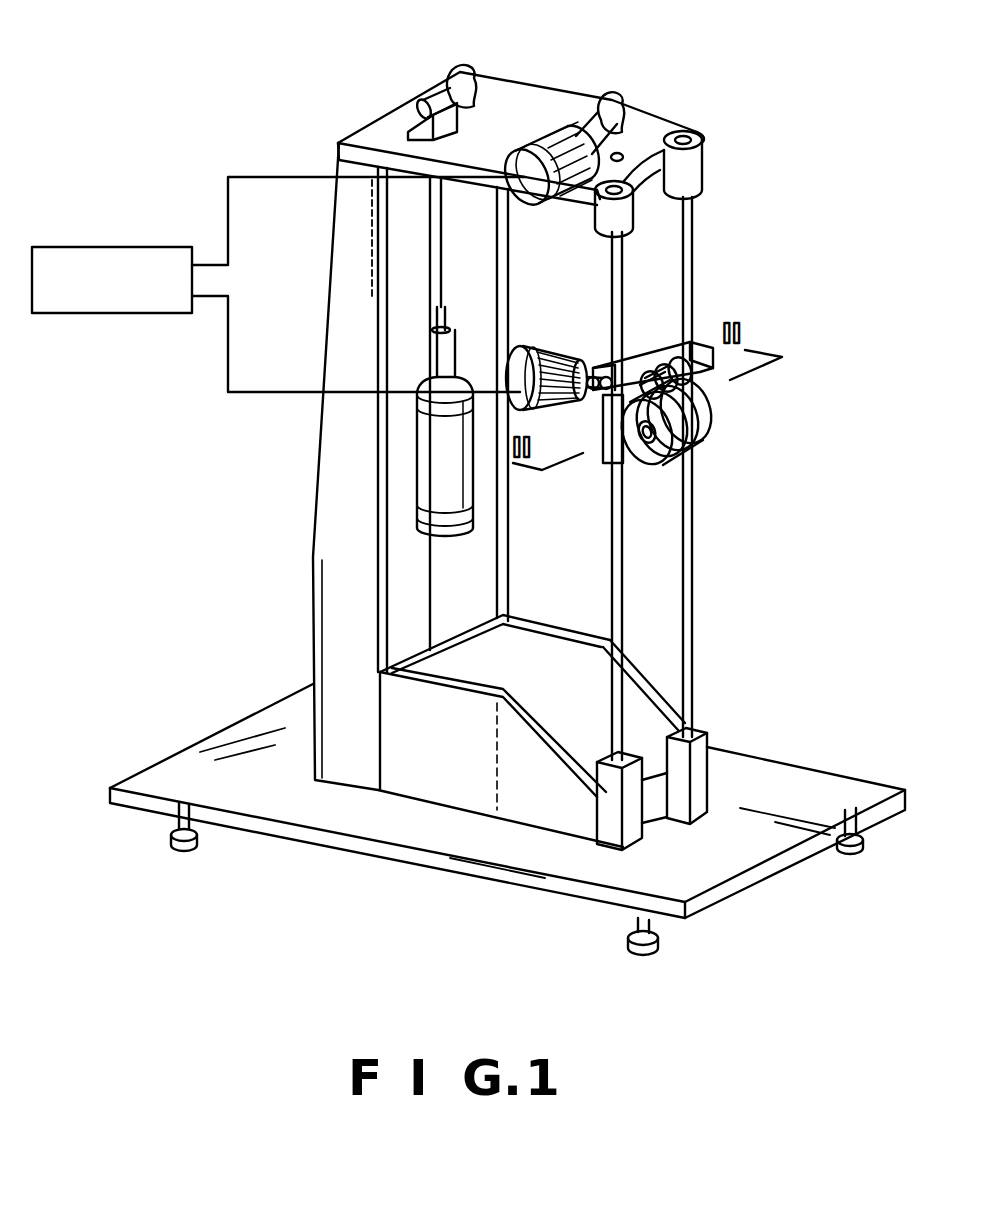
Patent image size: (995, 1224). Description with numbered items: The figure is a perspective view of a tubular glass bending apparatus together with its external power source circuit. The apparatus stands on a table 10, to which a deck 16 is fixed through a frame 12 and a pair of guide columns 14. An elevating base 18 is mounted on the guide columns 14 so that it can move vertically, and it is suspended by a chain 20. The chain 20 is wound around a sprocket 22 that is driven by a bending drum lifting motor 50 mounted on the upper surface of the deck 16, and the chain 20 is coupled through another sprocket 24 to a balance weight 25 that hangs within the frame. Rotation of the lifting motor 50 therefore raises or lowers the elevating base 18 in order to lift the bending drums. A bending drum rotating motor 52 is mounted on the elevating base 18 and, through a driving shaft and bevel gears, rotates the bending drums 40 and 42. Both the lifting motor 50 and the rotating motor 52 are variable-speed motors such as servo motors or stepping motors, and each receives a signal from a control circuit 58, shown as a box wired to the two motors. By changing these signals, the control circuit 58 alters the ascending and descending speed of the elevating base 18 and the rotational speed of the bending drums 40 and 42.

The table 10 is at (445, 878).
The frame 12 is at (312, 558).
The guide columns 14 is at (683, 290).
The deck 16 is at (384, 122).
The elevating base 18 is at (647, 347).
The chain 20 is at (628, 276).
The sprocket 22 is at (622, 112).
The sprocket 24 is at (458, 68).
The balance weight 25 is at (455, 528).
The bending drum 40 is at (703, 438).
The bending drum 42 is at (712, 412).
The bending drum lifting motor 50 is at (558, 134).
The bending drum rotating motor 52 is at (553, 352).
The control circuit 58 is at (108, 313).